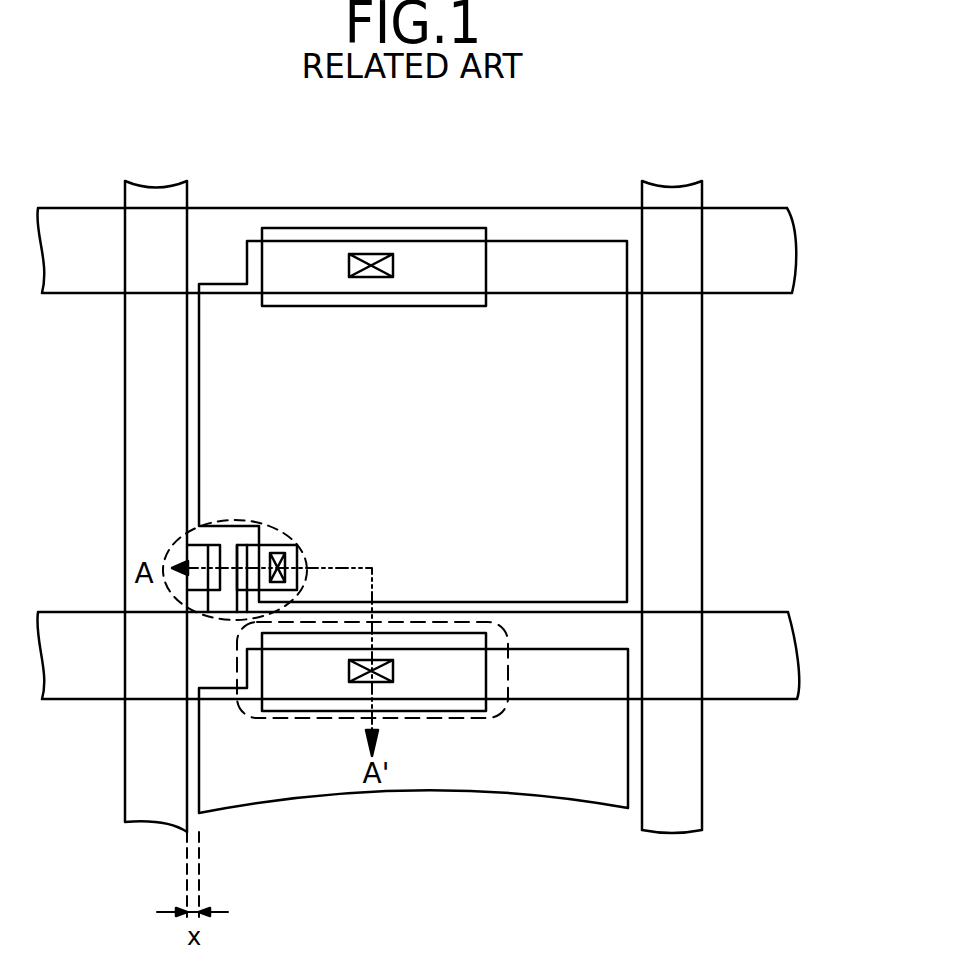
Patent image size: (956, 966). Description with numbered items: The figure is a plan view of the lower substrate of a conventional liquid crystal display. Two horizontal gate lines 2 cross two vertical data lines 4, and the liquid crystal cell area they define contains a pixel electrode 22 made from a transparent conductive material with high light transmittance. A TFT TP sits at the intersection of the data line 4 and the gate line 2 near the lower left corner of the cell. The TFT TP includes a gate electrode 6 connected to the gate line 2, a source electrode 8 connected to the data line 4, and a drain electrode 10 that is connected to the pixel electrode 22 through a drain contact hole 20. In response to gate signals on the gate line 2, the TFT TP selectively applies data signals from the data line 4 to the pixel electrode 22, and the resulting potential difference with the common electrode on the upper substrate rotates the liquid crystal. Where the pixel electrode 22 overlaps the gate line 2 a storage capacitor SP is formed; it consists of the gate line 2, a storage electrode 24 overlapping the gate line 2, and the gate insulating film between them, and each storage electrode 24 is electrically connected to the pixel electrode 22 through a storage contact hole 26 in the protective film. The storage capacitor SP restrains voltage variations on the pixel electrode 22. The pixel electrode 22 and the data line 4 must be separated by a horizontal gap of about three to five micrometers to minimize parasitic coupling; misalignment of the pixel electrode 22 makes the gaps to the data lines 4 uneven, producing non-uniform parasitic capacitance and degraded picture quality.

The gate line 2 is at (772, 665).
The data line 4 is at (158, 822).
The gate electrode 6 is at (231, 543).
The source electrode 8 is at (193, 553).
The drain electrode 10 is at (270, 547).
The drain contact hole 20 is at (287, 562).
The pixel electrode 22 is at (518, 444).
The storage electrode 24 is at (390, 236).
The storage contact hole 26 is at (393, 277).
The TFT TP is at (188, 548).
The storage capacitor SP is at (465, 717).